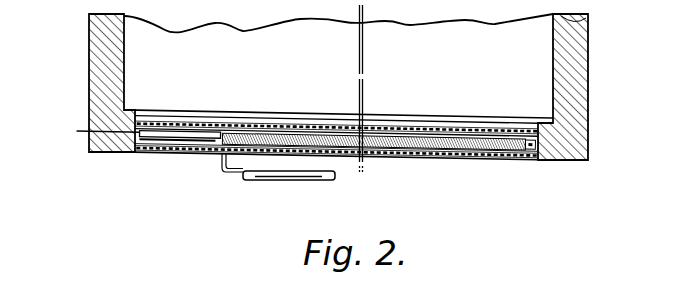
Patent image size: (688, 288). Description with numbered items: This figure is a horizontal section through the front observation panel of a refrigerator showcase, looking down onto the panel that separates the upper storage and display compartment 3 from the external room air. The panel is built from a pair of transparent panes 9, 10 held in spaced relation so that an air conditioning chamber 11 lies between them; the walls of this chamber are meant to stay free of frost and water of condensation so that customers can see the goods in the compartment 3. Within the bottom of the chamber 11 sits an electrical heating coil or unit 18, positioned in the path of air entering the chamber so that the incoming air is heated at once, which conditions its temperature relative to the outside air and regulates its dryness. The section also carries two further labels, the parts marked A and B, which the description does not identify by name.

The upper storage and display compartment 3 is at (338, 89).
The tube B is at (203, 134).
The transparent pane 10 is at (378, 125).
The electrical heating coil or unit 18 is at (428, 134).
The air conditioning chamber 11 is at (397, 152).
The transparent pane 9 is at (447, 153).
The supply pipe A is at (285, 178).